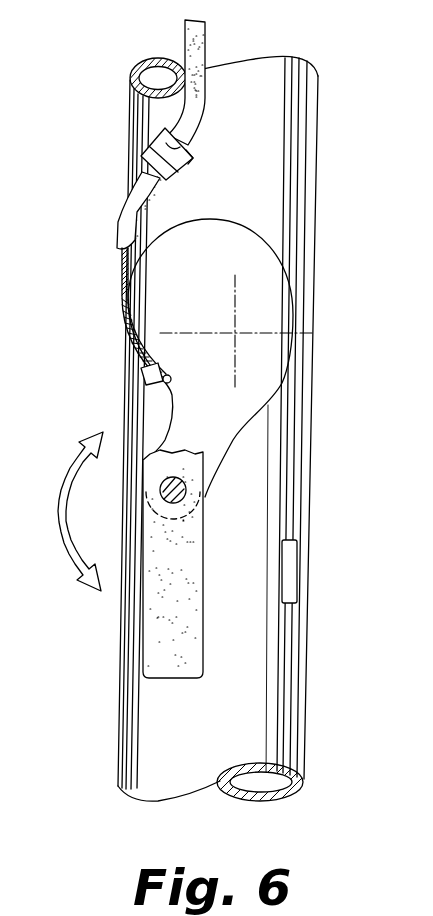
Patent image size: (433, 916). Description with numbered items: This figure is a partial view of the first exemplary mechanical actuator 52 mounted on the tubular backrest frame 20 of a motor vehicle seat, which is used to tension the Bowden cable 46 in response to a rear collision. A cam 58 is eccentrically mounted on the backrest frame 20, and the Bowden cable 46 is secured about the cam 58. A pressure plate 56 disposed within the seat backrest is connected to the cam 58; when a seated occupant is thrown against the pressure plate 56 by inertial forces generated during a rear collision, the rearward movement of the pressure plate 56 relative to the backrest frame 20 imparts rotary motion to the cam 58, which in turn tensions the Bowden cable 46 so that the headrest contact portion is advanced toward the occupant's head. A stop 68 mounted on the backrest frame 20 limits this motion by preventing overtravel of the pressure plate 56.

The backrest frame 20 is at (318, 190).
The Bowden cable 46 is at (118, 270).
The first mechanical actuator 52 is at (92, 363).
The pressure plate 56 is at (143, 632).
The cam 58 is at (287, 268).
The stop 68 is at (298, 548).